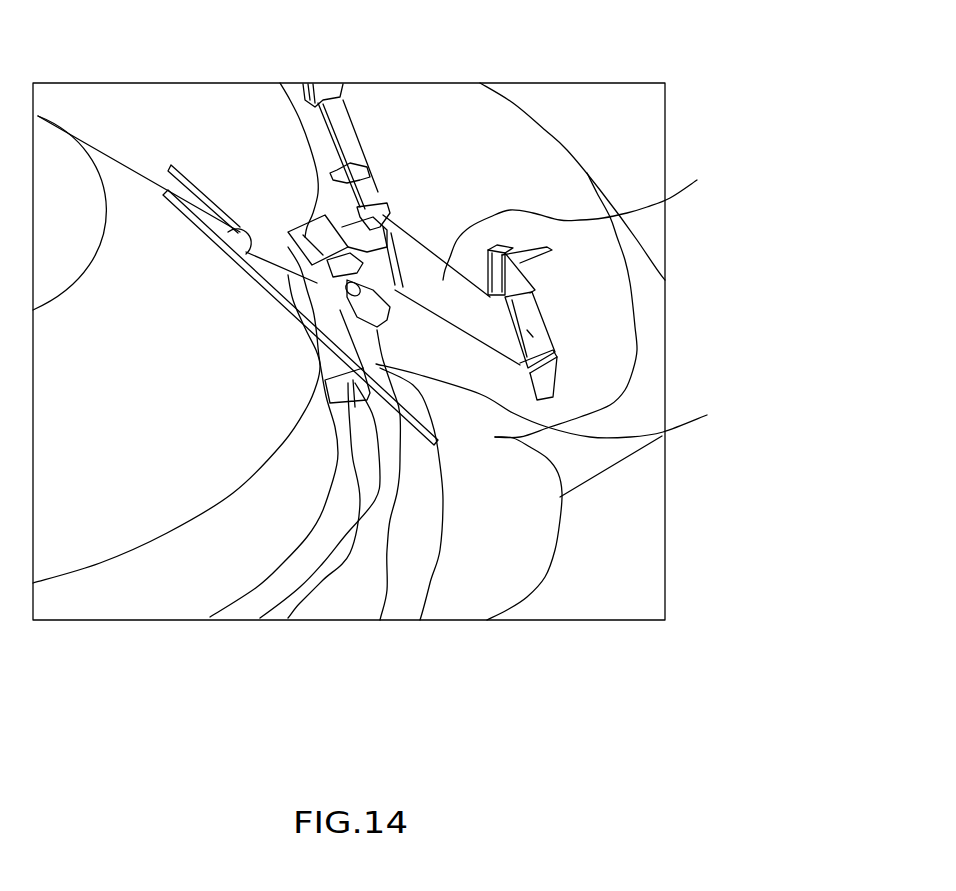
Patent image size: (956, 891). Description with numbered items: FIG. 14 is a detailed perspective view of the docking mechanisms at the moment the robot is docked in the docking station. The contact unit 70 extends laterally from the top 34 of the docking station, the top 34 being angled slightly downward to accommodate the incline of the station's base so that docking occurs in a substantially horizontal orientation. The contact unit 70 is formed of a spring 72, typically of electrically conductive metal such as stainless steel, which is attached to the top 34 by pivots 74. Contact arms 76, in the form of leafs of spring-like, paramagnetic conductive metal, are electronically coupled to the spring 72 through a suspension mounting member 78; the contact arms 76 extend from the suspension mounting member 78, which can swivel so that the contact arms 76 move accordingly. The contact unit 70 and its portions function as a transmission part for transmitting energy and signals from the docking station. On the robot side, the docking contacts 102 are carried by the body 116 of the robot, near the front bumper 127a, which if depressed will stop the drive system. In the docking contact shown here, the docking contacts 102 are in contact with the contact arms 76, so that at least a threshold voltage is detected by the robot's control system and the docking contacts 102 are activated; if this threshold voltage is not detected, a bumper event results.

The top 34 is at (566, 139).
The contact unit 70 is at (391, 203).
The spring 72 is at (582, 220).
The pivots 74 is at (343, 133).
The contact arms 76 is at (185, 170).
The suspension mounting member 78 is at (217, 203).
The docking contacts 102 is at (240, 245).
The body 116 is at (260, 537).
The front bumper 127a is at (423, 547).